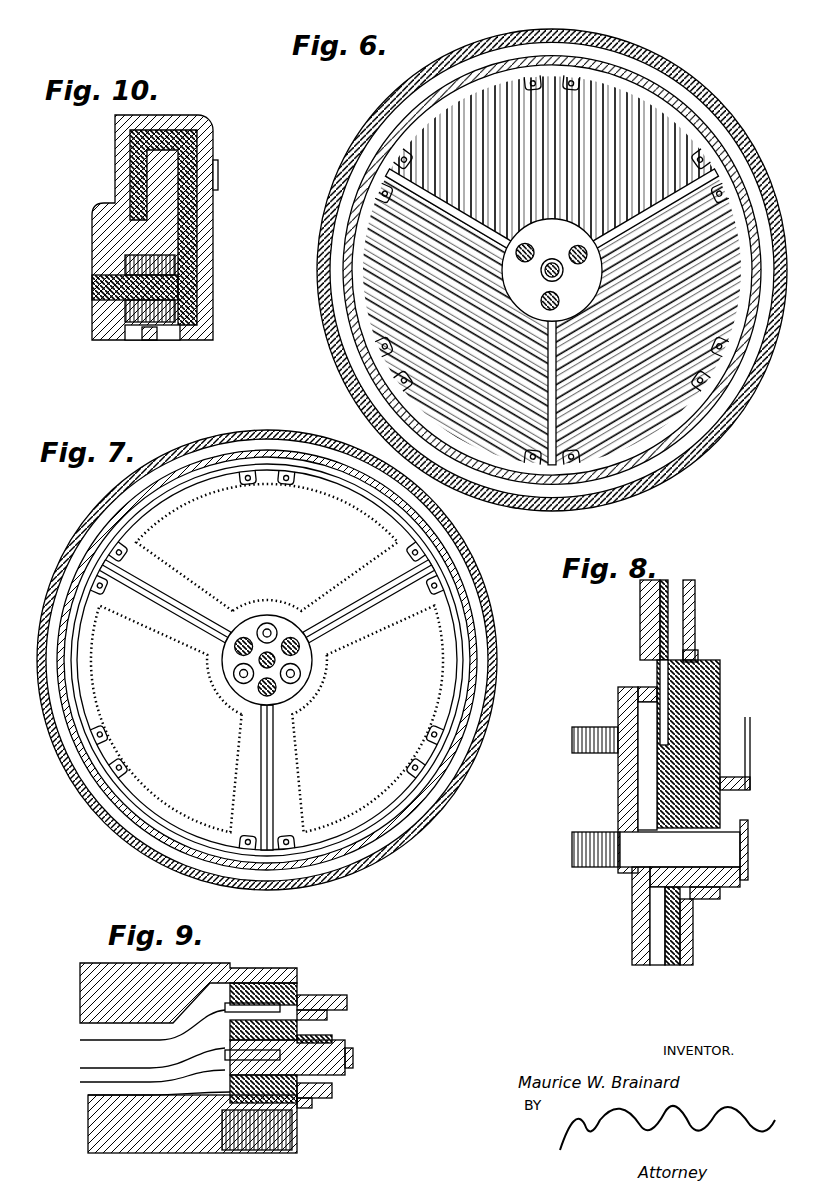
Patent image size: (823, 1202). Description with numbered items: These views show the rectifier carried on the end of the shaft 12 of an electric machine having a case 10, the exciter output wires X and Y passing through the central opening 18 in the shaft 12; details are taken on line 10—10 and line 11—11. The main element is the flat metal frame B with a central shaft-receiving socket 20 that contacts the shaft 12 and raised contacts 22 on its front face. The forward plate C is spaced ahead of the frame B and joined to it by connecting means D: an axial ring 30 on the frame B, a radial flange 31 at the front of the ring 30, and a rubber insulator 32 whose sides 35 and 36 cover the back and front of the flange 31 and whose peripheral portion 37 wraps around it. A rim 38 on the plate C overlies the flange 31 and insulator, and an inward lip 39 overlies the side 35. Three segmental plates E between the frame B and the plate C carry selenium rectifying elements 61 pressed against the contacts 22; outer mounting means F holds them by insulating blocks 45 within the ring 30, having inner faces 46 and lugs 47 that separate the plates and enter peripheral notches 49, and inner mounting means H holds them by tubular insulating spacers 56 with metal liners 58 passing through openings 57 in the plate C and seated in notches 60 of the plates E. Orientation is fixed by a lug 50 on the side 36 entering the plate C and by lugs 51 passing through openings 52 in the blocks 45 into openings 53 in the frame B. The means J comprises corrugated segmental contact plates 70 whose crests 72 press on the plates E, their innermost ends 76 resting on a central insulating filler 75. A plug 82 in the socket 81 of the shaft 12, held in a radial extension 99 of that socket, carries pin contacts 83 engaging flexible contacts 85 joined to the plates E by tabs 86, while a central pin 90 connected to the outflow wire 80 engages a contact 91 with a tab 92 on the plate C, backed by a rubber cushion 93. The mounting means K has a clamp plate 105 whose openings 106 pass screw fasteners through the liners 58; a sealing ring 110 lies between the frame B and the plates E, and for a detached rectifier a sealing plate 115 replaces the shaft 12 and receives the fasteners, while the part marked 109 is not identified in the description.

In FIG. 7, the case 10 is at (266, 510).
In FIG. 10, the case 10 is at (266, 410).
In FIG. 9, the section line 11— 11 is at (327, 950).
In FIG. 6, the shaft 12 is at (530, 122).
In FIG. 9, the shaft 12 is at (158, 1147).
In FIG. 9, the central opening 18 is at (100, 1085).
In FIG. 8, the shaft-receiving socket 20 is at (640, 695).
In FIG. 8, the contact means 22 is at (650, 610).
In FIG. 6, the axial ring 30 is at (340, 316).
In FIG. 7, the axial ring 30 is at (472, 678).
In FIG. 10, the axial ring 30 is at (140, 235).
In FIG. 6, the flange 31 is at (400, 107).
In FIG. 7, the flange 31 is at (465, 575).
In FIG. 10, the flange 31 is at (168, 195).
In FIG. 6, the insulator 32 is at (712, 106).
In FIG. 7, the insulator 32 is at (495, 718).
In FIG. 10, the side of insulator 35 is at (135, 180).
In FIG. 10, the side of insulator 36 is at (190, 222).
In FIG. 6, the peripheral portion 37 is at (545, 33).
In FIG. 7, the peripheral portion 37 is at (100, 500).
In FIG. 10, the peripheral portion 37 is at (186, 115).
In FIG. 6, the rim 38 is at (405, 88).
In FIG. 7, the rim 38 is at (405, 856).
In FIG. 10, the rim 38 is at (175, 114).
In FIG. 10, the lip 39 is at (113, 160).
In FIG. 6, the blocks 45 is at (728, 172).
In FIG. 7, the blocks 45 is at (100, 560).
In FIG. 10, the blocks 45 is at (132, 341).
In FIG. 6, the inner sides 46 is at (388, 205).
In FIG. 7, the inner sides 46 is at (124, 758).
In FIG. 10, the inner sides 46 is at (172, 341).
In FIG. 6, the lug 47 is at (585, 46).
In FIG. 7, the lug 47 is at (113, 570).
In FIG. 6, the peripheral notches 49 is at (365, 372).
In FIG. 7, the peripheral notches 49 is at (100, 746).
In FIG. 10, the forwardly projecting lug 50 is at (218, 170).
In FIG. 10, the axially disposed lugs 51 is at (94, 290).
In FIG. 10, the openings 52 is at (148, 341).
In FIG. 10, the openings 53 is at (100, 280).
In FIG. 8, the spacers 56 is at (748, 850).
In FIG. 8, the openings 57 is at (667, 850).
In FIG. 8, the metal liners 58 is at (700, 835).
In FIG. 7, the notches 60 is at (307, 672).
In FIG. 7, the rectifying elements 61 is at (257, 601).
In FIG. 6, the contact 70 is at (470, 108).
In FIG. 6, the crests 72 is at (638, 108).
In FIG. 6, the central filler 75 is at (547, 241).
In FIG. 8, the central filler 75 is at (720, 682).
In FIG. 6, the innermost ends 76 is at (560, 244).
In FIG. 8, the innermost ends 76 is at (664, 668).
In FIG. 9, the outflow wire 80 is at (120, 1072).
In FIG. 9, the central socket 81 is at (262, 1118).
In FIG. 9, the plug 82 is at (232, 1040).
In FIG. 9, the pin contacts 83 is at (327, 1015).
In FIG. 7, the flexible contact 85 is at (206, 687).
In FIG. 8, the flexible contact 85 is at (648, 750).
In FIG. 8, the tab or contact plate 86 is at (648, 712).
In FIG. 6, the central contact pin 90 is at (560, 275).
In FIG. 7, the central contact pin 90 is at (246, 660).
In FIG. 9, the central contact pin 90 is at (352, 1058).
In FIG. 8, the contact 91 is at (725, 785).
In FIG. 8, the tab or contact plate 92 is at (700, 756).
In FIG. 8, the cushion 93 is at (700, 655).
In FIG. 9, the radial extension 99 is at (233, 976).
In FIG. 8, the clamp plate 105 is at (716, 905).
In FIG. 8, the openings 106 is at (710, 876).
In FIG. 8, the rod 109 is at (752, 728).
In FIG. 8, the sealing ring 110 is at (656, 672).
In FIG. 8, the sealing plate 115 is at (628, 795).
In FIG. 6, the frame B is at (716, 440).
In FIG. 7, the frame B is at (480, 642).
In FIG. 8, the frame B is at (632, 945).
In FIG. 10, the frame B is at (92, 330).
In FIG. 8, the forward plate C is at (698, 612).
In FIG. 10, the forward plate C is at (213, 312).
In FIG. 6, the connecting means D is at (342, 169).
In FIG. 7, the connecting means D is at (478, 770).
In FIG. 10, the connecting means D is at (113, 130).
In FIG. 7, the segmental plates E is at (243, 645).
In FIG. 8, the segmental plates E is at (656, 625).
In FIG. 6, the outer mounting means F is at (395, 163).
In FIG. 7, the outer mounting means F is at (455, 570).
In FIG. 7, the inner mounting means H is at (262, 700).
In FIG. 8, the inner mounting means H is at (640, 865).
In FIG. 6, the connecting means J is at (640, 95).
In FIG. 6, the mounting means K is at (525, 289).
In FIG. 7, the mounting means K is at (262, 705).
In FIG. 8, the mounting means K is at (750, 718).
In FIG. 9, the wire X is at (152, 1026).
In FIG. 9, the wire Y is at (152, 1057).